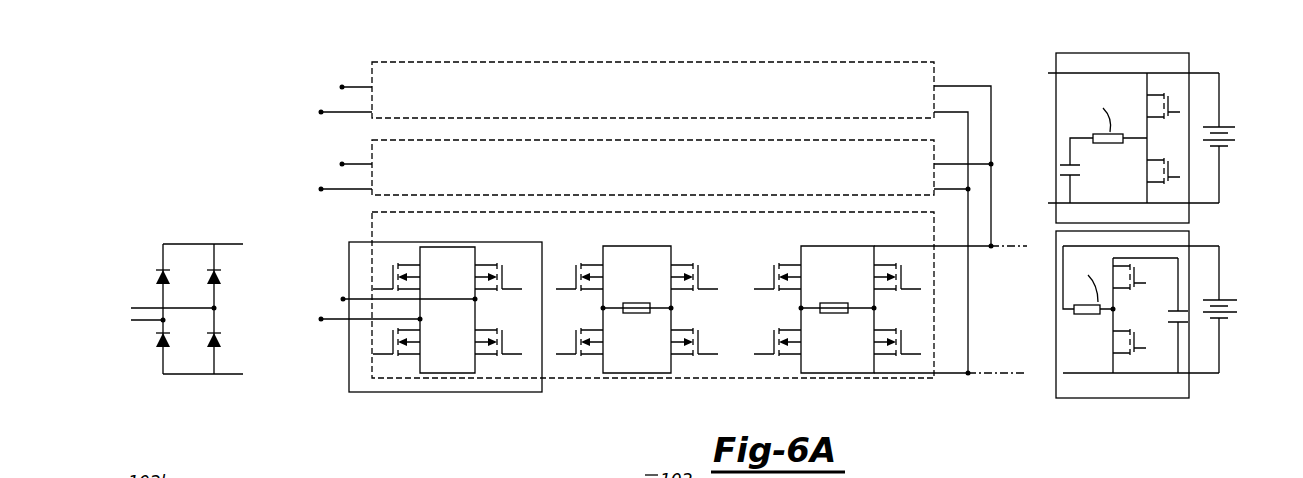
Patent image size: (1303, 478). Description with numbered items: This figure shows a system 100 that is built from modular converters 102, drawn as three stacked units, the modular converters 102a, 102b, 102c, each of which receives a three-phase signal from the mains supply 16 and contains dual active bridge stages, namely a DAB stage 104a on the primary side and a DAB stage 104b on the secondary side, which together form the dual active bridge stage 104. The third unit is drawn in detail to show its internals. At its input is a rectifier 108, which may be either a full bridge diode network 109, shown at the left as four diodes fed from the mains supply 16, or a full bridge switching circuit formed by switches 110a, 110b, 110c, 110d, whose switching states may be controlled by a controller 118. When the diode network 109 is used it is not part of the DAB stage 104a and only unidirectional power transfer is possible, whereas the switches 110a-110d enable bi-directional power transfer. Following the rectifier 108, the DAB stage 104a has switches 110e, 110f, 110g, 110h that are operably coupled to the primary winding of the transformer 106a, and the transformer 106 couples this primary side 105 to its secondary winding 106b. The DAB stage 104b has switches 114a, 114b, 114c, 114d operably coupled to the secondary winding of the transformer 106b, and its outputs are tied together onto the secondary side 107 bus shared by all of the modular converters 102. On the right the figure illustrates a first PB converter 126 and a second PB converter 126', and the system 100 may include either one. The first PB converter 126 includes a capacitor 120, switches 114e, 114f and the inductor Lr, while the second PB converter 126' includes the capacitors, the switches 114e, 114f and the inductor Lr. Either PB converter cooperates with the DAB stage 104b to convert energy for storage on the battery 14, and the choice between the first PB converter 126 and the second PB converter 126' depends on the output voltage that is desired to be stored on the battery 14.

The system 100 is at (241, 111).
The controller 118 is at (287, 79).
The mains supply 16 is at (276, 323).
The full bridge diode network 109 is at (140, 292).
The rectifier 108 is at (200, 226).
The modular converter 102 is at (643, 53).
The modular converter 102a is at (602, 95).
The modular converter 102b is at (602, 172).
The modular converter 102c is at (602, 244).
The dual active bridge stage 104 is at (697, 208).
The DAB stage 104a is at (700, 234).
The DAB stage 104b is at (835, 240).
The primary side 105 is at (668, 180).
The transformer 106 is at (623, 318).
The primary winding of the transformer 106a is at (637, 313).
The secondary winding of the transformer 106b is at (833, 313).
The secondary side 107 is at (975, 222).
The switch 110a is at (390, 276).
The switch 110b is at (510, 287).
The switch 110c is at (390, 341).
The switch 110d is at (510, 352).
The switch 110e is at (604, 264).
The switch 110f is at (566, 356).
The switch 110g is at (700, 294).
The switch 110h is at (708, 356).
The switch 114a is at (760, 288).
The switch 114b is at (760, 352).
The switch 114c is at (902, 278).
The switch 114d is at (902, 342).
The switch 114e is at (1180, 99).
The switch 114f is at (1180, 178).
The first PB converter 126 is at (1166, 136).
The second PB converter 126' is at (1171, 321).
The inductor Lr is at (1096, 204).
The capacitor 120 is at (1077, 178).
The battery 14 is at (1237, 136).